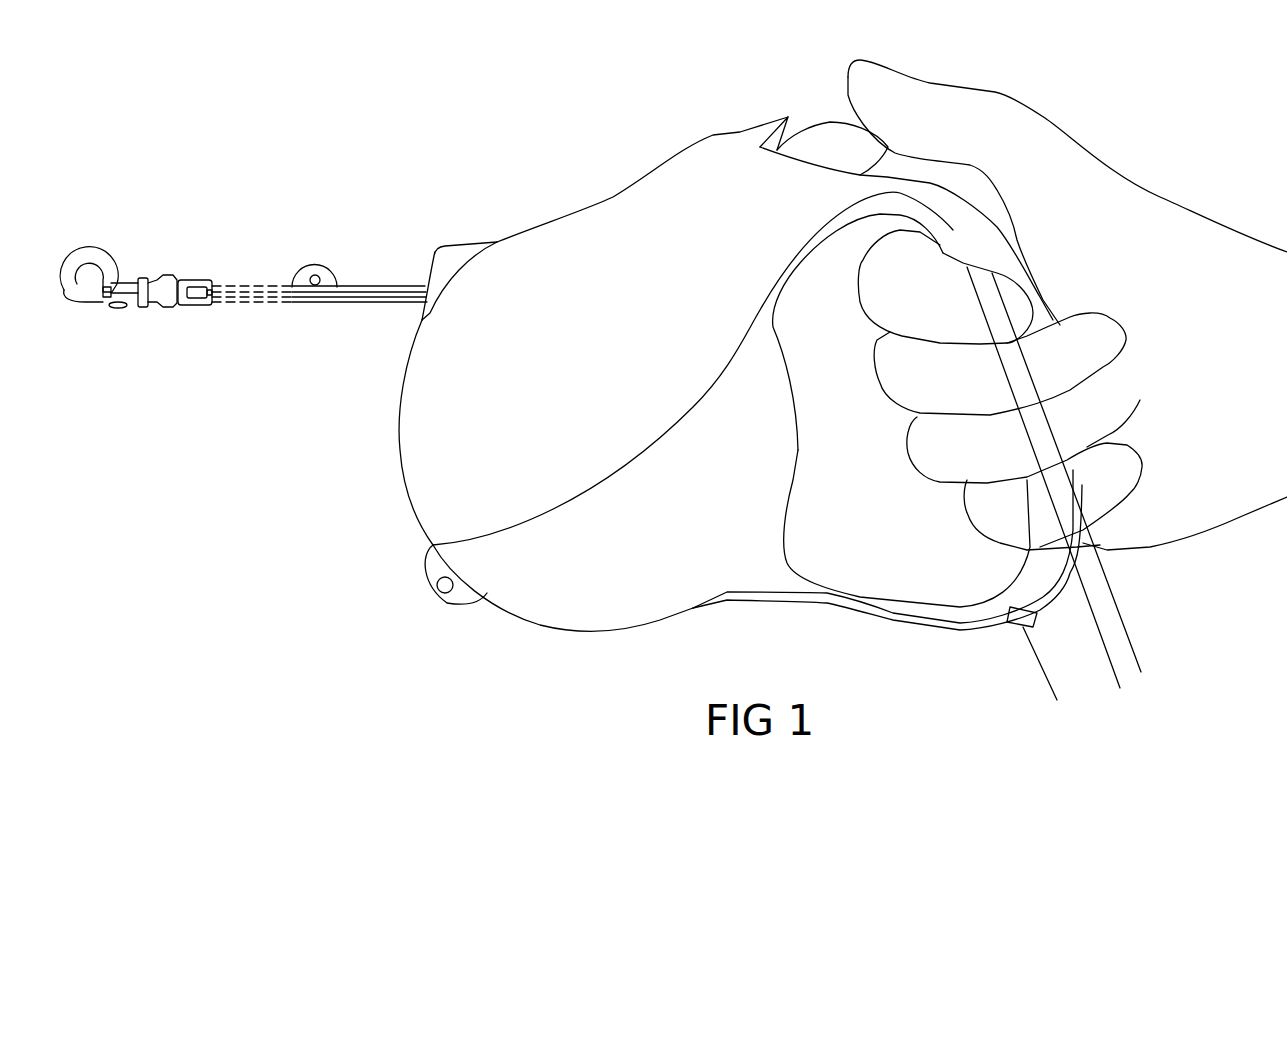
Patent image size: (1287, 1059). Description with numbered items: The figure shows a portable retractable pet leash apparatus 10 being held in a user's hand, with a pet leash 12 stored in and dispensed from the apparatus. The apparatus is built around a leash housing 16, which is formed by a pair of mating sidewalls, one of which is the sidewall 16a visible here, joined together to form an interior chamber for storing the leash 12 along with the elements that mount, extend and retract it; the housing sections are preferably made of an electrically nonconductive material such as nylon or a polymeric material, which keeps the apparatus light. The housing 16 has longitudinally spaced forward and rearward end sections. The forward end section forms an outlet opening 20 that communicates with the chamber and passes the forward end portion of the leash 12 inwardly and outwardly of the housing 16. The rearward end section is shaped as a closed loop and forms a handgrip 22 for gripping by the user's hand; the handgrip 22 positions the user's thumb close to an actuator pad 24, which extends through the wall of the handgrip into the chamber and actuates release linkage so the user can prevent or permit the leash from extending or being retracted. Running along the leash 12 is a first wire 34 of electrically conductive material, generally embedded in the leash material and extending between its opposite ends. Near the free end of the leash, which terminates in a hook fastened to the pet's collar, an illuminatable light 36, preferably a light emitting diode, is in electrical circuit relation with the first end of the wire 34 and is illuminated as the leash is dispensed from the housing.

The portable retractable pet leash apparatus 10 is at (372, 565).
The pet leash 12 is at (296, 310).
The leash housing 16 is at (388, 427).
The sidewall 16a is at (417, 457).
The outlet opening 20 is at (430, 268).
The handgrip 22 is at (880, 623).
The actuator pad 24 is at (767, 123).
The first wire 34 is at (380, 287).
The illuminatable light 36 is at (305, 265).